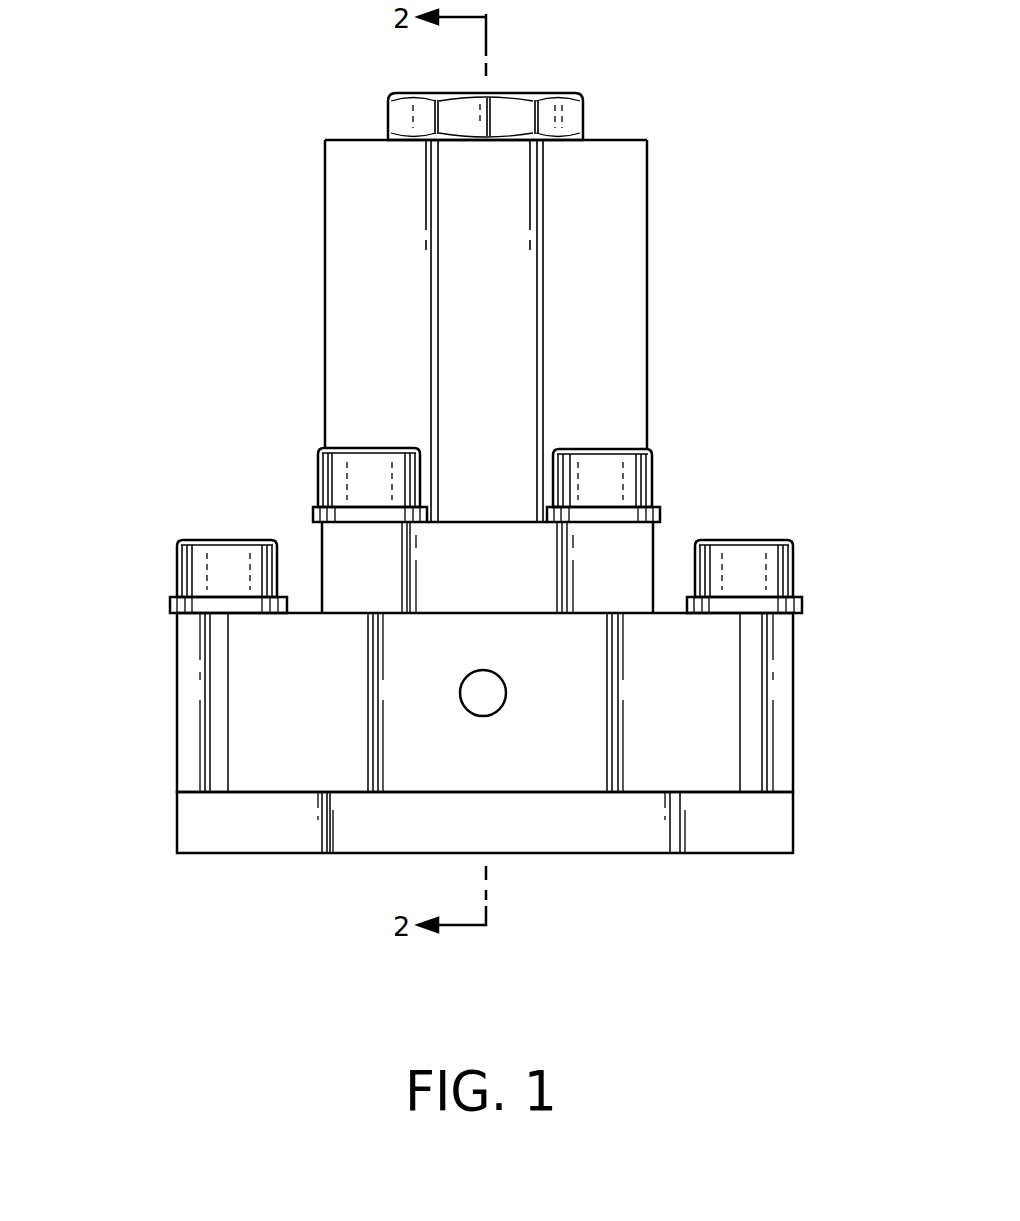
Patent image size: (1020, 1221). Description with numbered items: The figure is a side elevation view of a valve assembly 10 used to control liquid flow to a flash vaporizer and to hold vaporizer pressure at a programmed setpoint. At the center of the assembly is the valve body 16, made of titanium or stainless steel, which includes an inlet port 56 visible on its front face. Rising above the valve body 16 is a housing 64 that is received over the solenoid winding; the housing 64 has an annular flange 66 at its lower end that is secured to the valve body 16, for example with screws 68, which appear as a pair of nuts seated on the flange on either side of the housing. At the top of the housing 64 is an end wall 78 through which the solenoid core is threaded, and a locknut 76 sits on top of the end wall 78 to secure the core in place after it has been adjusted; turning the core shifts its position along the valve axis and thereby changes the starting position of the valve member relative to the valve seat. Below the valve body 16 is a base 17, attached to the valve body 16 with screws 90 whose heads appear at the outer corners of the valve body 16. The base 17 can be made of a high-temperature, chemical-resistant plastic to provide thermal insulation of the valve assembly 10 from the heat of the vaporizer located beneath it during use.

The valve assembly 10 is at (773, 148).
The valve body 16 is at (177, 722).
The base 17 is at (793, 828).
The inlet port 56 is at (507, 693).
The housing 64 is at (647, 350).
The annular flange 66 is at (322, 553).
The screws 68 is at (633, 487).
The locknut 76 is at (562, 100).
The end wall 78 is at (627, 140).
The screws 90 is at (187, 568).